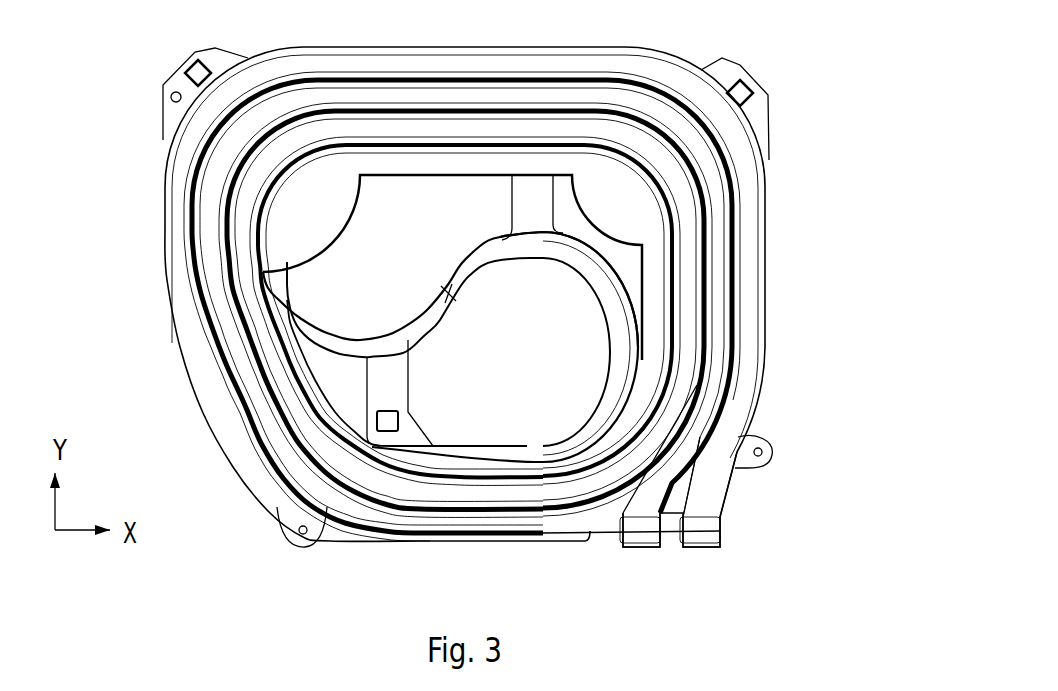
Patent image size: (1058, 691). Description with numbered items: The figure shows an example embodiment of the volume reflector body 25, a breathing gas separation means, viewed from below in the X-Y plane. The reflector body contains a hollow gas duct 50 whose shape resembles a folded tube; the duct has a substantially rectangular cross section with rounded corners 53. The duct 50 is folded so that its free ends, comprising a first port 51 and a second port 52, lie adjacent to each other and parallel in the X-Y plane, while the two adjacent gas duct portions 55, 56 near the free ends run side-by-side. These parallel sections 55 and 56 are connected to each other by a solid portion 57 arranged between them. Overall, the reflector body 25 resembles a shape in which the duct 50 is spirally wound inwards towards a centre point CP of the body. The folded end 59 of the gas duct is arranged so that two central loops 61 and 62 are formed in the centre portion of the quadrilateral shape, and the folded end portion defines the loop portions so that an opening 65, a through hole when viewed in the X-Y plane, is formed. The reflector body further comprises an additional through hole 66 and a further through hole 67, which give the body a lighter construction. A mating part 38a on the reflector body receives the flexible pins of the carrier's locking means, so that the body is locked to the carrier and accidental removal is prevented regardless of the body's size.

The volume reflector body 25 is at (657, 34).
The mating part 38a is at (746, 83).
The hollow gas duct 50 is at (486, 150).
The first port 51 is at (703, 543).
The second port 52 is at (643, 543).
The rounded corners 53 is at (700, 282).
The gas duct portion 55 is at (762, 462).
The gas duct portion 56 is at (720, 402).
The solid portion 57 is at (736, 383).
The folded end 59 is at (606, 248).
The central loop 61 is at (597, 304).
The central loop 62 is at (314, 286).
The opening 65 is at (581, 353).
The additional through hole 66 is at (334, 394).
The further through hole 67 is at (600, 194).
The centre point CP is at (450, 292).